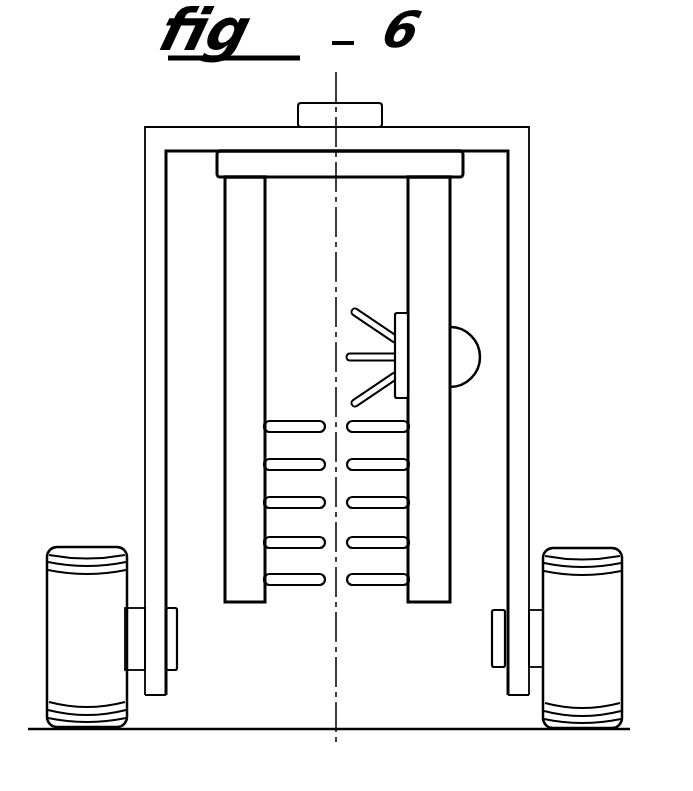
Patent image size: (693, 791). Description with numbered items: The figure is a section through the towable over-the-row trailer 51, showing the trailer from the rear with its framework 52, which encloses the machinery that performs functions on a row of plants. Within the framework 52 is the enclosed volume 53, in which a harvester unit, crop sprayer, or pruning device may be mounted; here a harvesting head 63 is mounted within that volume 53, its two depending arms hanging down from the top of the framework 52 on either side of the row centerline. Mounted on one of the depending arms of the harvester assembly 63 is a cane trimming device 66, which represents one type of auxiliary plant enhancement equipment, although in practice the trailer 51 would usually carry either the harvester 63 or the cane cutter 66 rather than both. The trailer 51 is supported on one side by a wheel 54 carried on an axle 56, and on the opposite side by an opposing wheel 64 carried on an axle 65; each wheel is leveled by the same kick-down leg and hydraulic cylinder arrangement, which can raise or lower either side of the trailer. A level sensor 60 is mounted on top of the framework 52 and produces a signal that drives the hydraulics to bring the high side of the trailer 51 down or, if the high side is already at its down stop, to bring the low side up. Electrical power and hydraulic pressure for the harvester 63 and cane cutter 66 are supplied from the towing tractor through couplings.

The trailer 51 is at (496, 77).
The framework 52 is at (180, 126).
The enclosed volume 53 is at (322, 240).
The wheel 54 is at (87, 547).
The axle 56 is at (178, 650).
The level sensor 60 is at (377, 104).
The harvesting head 63 is at (243, 604).
The opposing wheel 64 is at (590, 548).
The axle 65 is at (490, 648).
The cane trimming device 66 is at (478, 342).